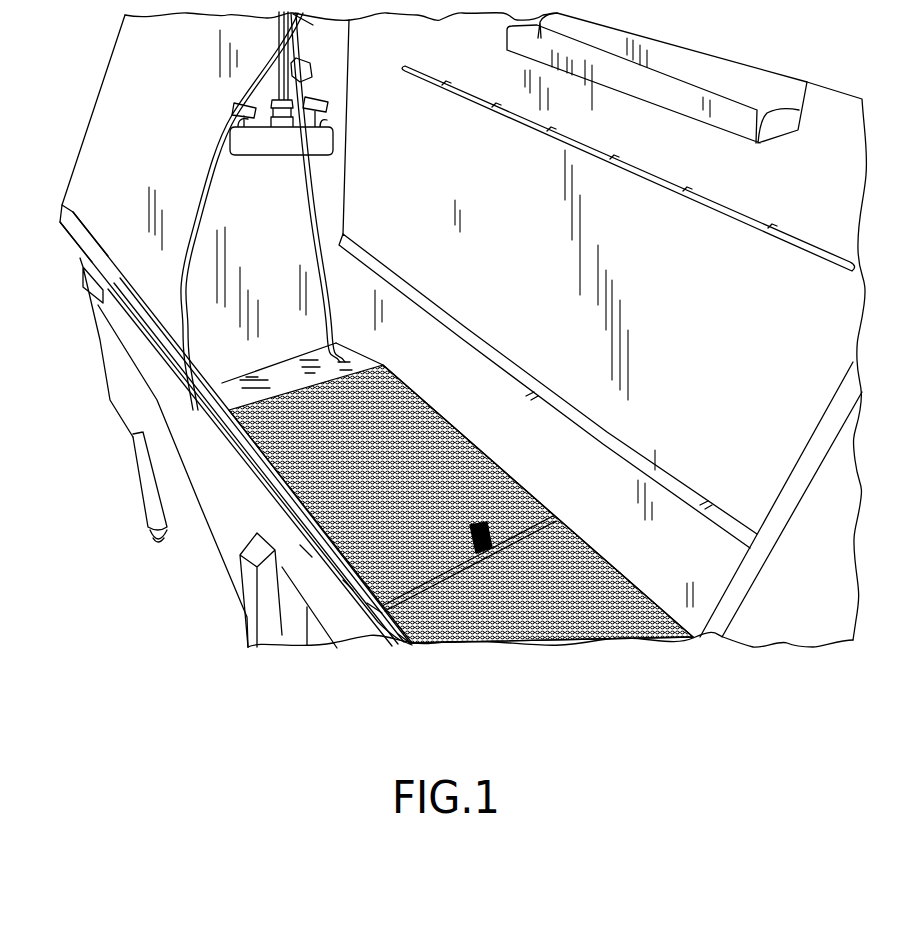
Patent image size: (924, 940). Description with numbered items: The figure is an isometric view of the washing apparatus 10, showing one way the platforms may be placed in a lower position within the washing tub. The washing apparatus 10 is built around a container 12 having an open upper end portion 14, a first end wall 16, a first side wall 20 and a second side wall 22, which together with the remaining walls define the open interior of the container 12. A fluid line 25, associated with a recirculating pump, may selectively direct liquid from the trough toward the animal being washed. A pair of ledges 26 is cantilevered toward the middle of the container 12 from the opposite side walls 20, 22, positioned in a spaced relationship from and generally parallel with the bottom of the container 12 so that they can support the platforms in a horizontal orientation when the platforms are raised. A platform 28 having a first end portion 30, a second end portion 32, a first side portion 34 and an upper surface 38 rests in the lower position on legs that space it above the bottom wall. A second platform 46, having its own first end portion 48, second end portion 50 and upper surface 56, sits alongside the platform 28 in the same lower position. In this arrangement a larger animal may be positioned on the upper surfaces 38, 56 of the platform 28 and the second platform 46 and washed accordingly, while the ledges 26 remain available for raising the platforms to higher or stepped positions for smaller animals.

The washing apparatus 10 is at (52, 103).
The container 12 is at (78, 357).
The open upper end portion 14 is at (72, 212).
The first end wall 16 is at (143, 237).
The first side wall 20 is at (157, 396).
The second side wall 22 is at (757, 462).
The fluid line 25 is at (203, 190).
The pair of ledges 26 is at (533, 356).
The platform 28 is at (532, 478).
The first end portion 30 is at (288, 366).
The second end portion 32 is at (542, 543).
The first side portion 34 is at (474, 430).
The upper surface 38 is at (385, 478).
The second platform 46 is at (606, 553).
The first end portion 48 is at (532, 522).
The second end portion 50 is at (659, 586).
The upper surface 56 is at (534, 617).